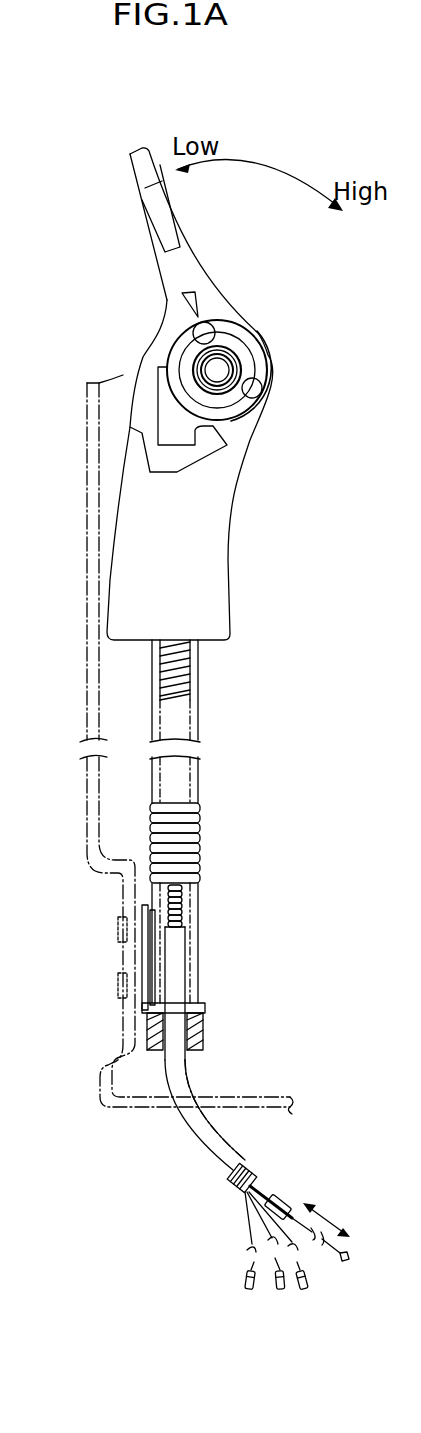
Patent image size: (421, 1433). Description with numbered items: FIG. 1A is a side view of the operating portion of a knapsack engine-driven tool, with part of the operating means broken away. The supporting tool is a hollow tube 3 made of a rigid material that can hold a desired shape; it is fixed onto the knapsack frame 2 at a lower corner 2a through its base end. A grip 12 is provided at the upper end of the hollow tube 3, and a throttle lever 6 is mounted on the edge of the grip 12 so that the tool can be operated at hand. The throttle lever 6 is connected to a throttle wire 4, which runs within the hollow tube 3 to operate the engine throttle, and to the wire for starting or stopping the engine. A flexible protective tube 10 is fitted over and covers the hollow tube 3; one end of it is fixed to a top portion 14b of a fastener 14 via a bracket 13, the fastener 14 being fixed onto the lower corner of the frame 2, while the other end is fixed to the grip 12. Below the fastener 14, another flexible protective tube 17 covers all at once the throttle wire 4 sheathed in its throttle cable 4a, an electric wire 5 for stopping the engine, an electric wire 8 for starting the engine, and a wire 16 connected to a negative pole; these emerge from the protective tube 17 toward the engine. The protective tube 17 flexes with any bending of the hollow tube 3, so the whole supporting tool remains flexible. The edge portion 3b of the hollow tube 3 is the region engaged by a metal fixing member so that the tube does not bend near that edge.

The knapsack frame 2 is at (97, 512).
The lower corner 2a is at (130, 1033).
The hollow tube 3 is at (225, 721).
The edge portion 3b is at (192, 660).
The throttle wire 4 is at (279, 1162).
The throttle cable 4a is at (256, 1190).
The electric wire for stopping the engine 5 is at (330, 1265).
The throttle lever 6 is at (190, 238).
The electric wire for starting the engine 8 is at (250, 1256).
The flexible protective tube 10 is at (198, 828).
The grip 12 is at (202, 552).
The bracket 13 is at (203, 1013).
The fastener 14 is at (232, 971).
The top portion 14b is at (190, 975).
The wire connected to a negative pole 16 is at (252, 1263).
The flexible protective tube 17 is at (233, 1190).